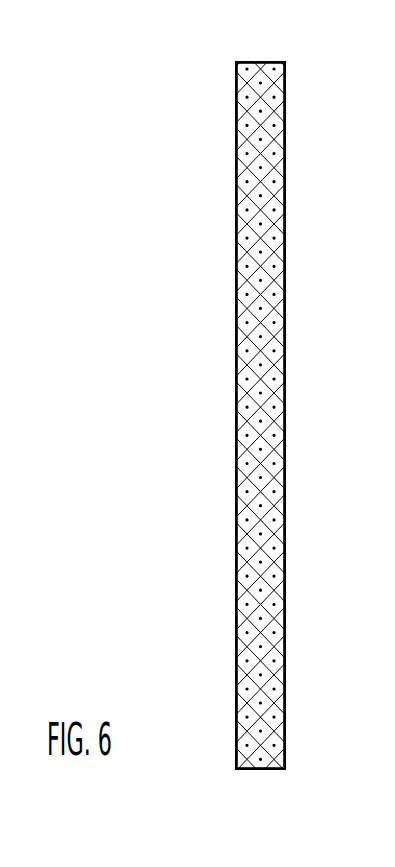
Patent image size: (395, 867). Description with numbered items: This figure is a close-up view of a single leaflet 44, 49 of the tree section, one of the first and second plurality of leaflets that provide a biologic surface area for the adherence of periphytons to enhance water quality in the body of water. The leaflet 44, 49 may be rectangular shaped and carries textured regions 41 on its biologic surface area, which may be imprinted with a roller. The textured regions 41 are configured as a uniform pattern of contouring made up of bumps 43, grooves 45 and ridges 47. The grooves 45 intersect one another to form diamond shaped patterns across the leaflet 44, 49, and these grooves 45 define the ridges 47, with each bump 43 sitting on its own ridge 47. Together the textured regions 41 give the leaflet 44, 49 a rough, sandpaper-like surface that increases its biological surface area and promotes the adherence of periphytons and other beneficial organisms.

The textured regions 41 is at (268, 196).
The bump 43 is at (280, 267).
The leaflet 44 is at (247, 62).
The grooves 45 is at (263, 120).
The ridge 47 is at (248, 160).
The leaflet 49 is at (261, 416).